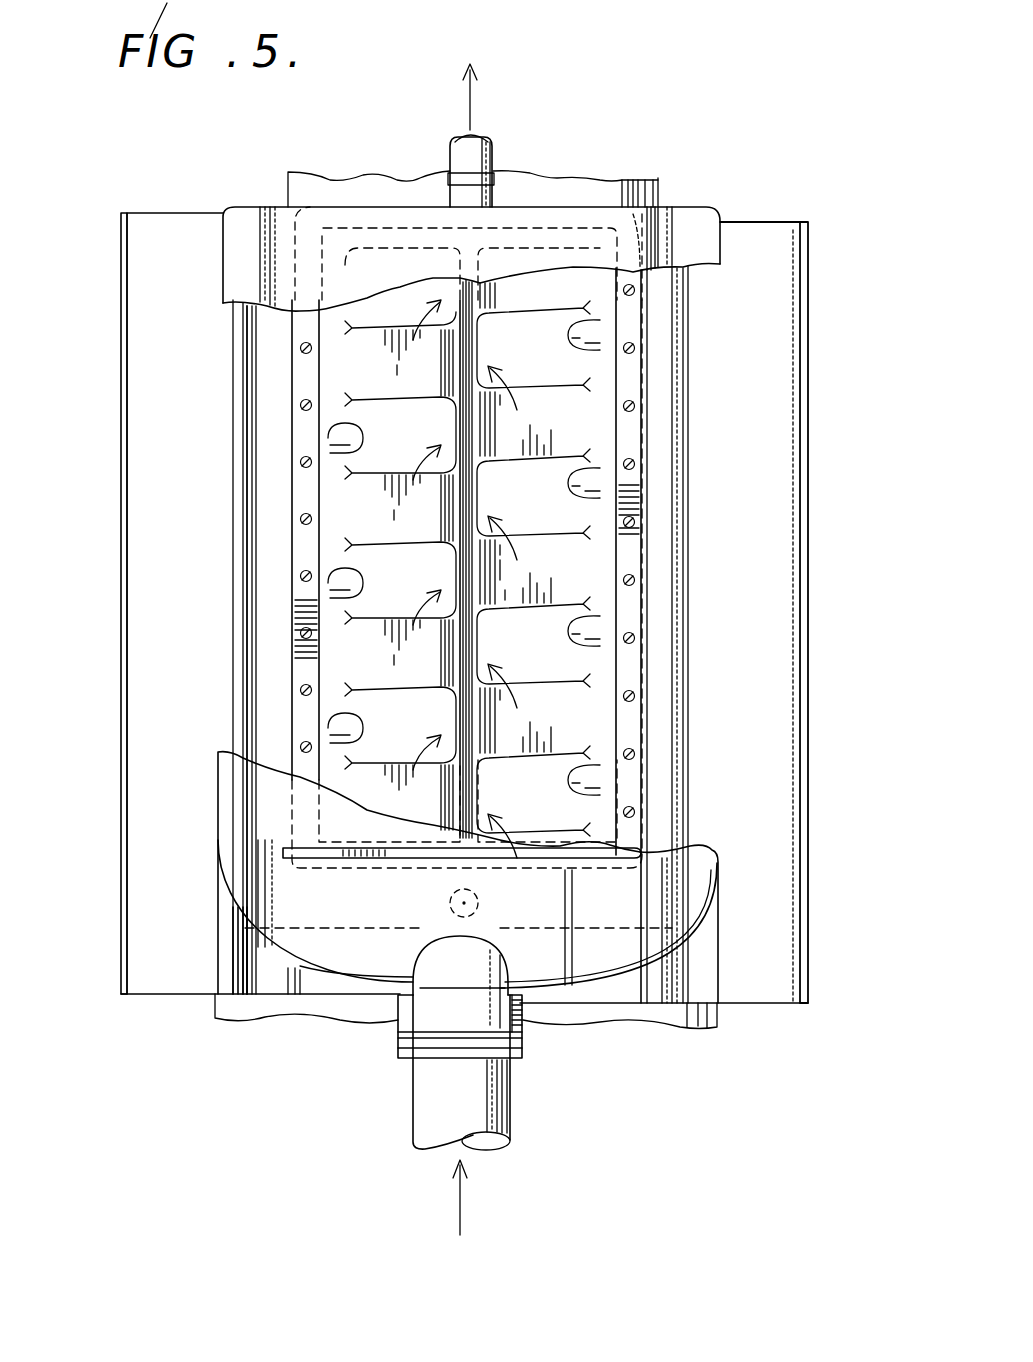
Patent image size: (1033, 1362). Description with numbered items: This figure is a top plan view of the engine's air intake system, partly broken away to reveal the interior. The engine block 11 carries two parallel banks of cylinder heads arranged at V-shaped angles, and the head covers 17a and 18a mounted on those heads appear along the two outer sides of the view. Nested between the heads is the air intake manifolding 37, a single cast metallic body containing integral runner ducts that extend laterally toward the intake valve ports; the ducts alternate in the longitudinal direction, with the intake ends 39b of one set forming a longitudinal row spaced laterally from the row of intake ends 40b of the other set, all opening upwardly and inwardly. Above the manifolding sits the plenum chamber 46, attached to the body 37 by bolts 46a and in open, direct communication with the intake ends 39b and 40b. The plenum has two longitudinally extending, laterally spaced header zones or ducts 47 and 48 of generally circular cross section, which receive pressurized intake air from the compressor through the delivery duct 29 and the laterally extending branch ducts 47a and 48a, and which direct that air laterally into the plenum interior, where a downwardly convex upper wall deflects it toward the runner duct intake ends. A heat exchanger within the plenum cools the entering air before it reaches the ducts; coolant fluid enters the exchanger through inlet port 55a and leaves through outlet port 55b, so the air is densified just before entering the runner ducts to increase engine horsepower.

The block 11 is at (215, 1022).
The head cover 17a is at (138, 533).
The head cover 18a is at (775, 383).
The duct 29 is at (412, 1118).
The air intake manifolding 37 is at (640, 545).
The intake ends of ducts 39 39b is at (390, 297).
The intake ends of ducts 40 40b is at (534, 345).
The plenum chamber 46 is at (690, 204).
The bolts 46a is at (635, 695).
The header zone or duct 47 is at (227, 773).
The branch duct 47a is at (342, 963).
The header zone or duct 48 is at (703, 860).
The branch duct 48a is at (574, 972).
The inlet port 55a is at (480, 903).
The outlet port 55b is at (493, 198).